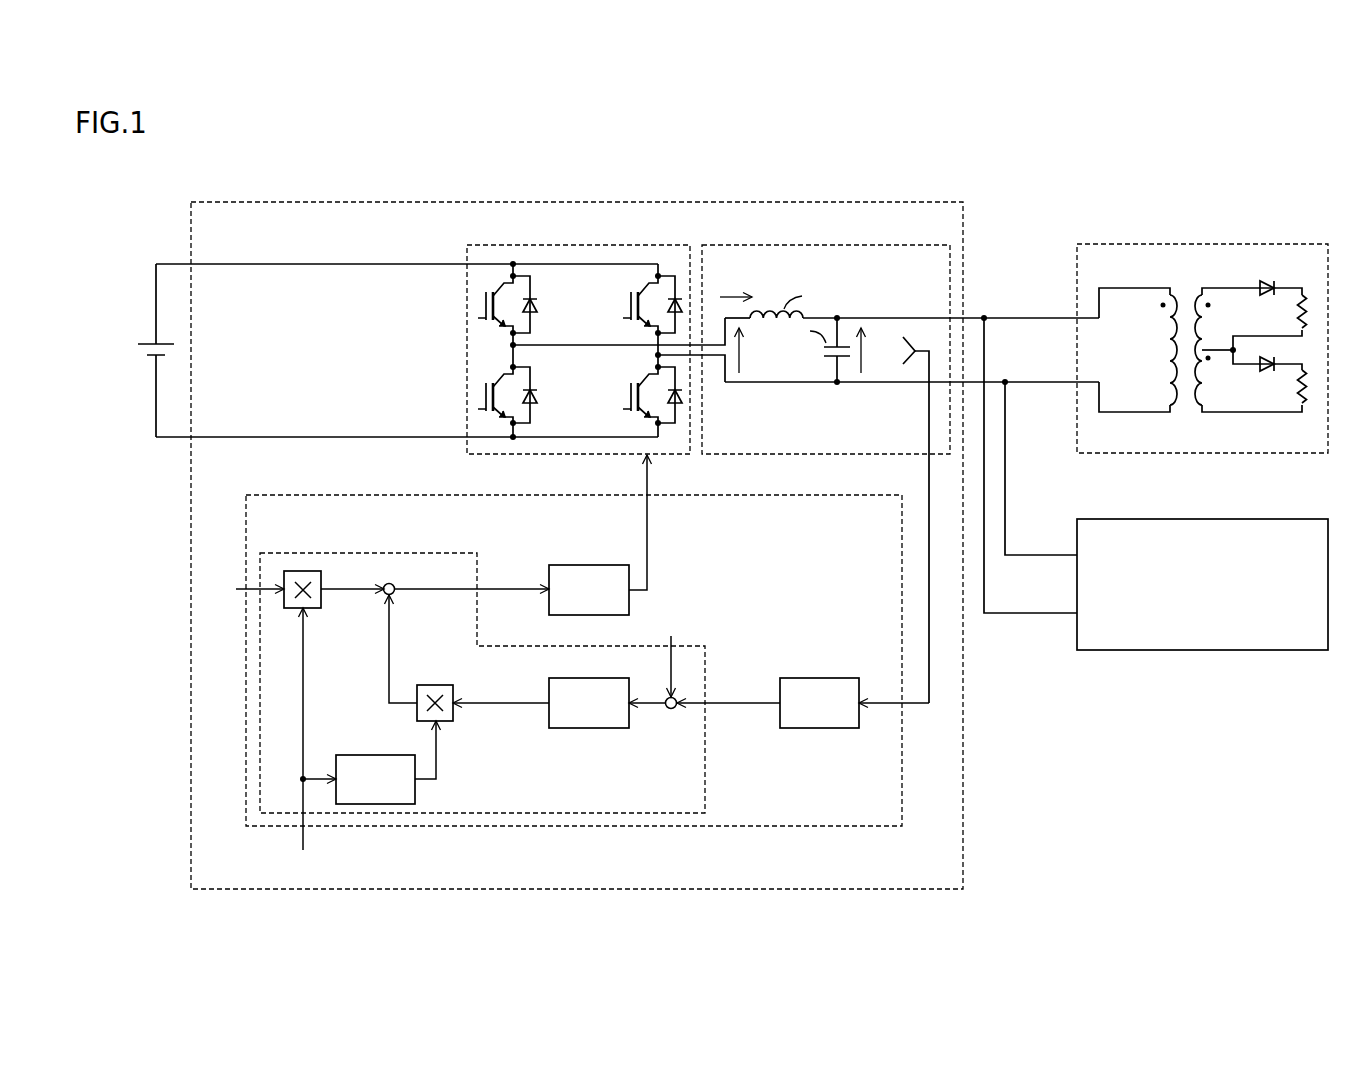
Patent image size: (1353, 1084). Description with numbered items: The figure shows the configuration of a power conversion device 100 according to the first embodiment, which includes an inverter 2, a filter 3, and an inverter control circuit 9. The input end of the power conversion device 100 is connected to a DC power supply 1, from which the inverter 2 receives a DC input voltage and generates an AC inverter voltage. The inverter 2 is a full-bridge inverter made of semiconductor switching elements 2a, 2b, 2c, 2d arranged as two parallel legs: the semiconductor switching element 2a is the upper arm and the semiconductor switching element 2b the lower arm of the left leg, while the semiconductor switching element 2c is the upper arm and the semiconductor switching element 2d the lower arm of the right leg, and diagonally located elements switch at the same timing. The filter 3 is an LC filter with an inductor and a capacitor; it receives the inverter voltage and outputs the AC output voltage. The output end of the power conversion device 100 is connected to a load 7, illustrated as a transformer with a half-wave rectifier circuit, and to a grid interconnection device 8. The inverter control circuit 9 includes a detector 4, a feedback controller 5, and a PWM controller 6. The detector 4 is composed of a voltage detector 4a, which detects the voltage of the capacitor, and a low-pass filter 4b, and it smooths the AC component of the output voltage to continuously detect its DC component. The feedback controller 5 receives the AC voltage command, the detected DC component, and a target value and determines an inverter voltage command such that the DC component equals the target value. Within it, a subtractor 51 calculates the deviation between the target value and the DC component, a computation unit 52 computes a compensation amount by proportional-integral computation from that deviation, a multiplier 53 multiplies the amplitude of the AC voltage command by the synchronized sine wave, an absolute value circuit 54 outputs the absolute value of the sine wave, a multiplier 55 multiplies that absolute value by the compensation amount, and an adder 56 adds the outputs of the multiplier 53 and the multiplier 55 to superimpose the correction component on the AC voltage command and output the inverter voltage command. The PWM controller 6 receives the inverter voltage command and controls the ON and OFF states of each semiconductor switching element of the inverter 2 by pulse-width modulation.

The power conversion device 100 is at (248, 201).
The DC power supply 1 is at (152, 343).
The inverter 2 is at (496, 244).
The semiconductor switching element 2a is at (478, 306).
The semiconductor switching element 2b is at (478, 395).
The semiconductor switching element 2c is at (628, 305).
The semiconductor switching element 2d is at (628, 395).
The filter 3 is at (731, 244).
The detector 4 is at (893, 520).
The voltage detector 4a is at (908, 362).
The low-pass filter 4b is at (812, 678).
The feedback controller 5 is at (440, 553).
The pulse width modulation (PWM) controller 6 is at (594, 565).
The load 7 is at (1108, 244).
The grid interconnection device 8 is at (1115, 519).
The inverter control circuit 9 is at (773, 494).
The subtractor 51 is at (671, 733).
The computation unit 52 is at (590, 678).
The multiplier 53 is at (303, 571).
The absolute value circuit 54 is at (375, 755).
The multiplier 55 is at (435, 684).
The adder 56 is at (395, 584).